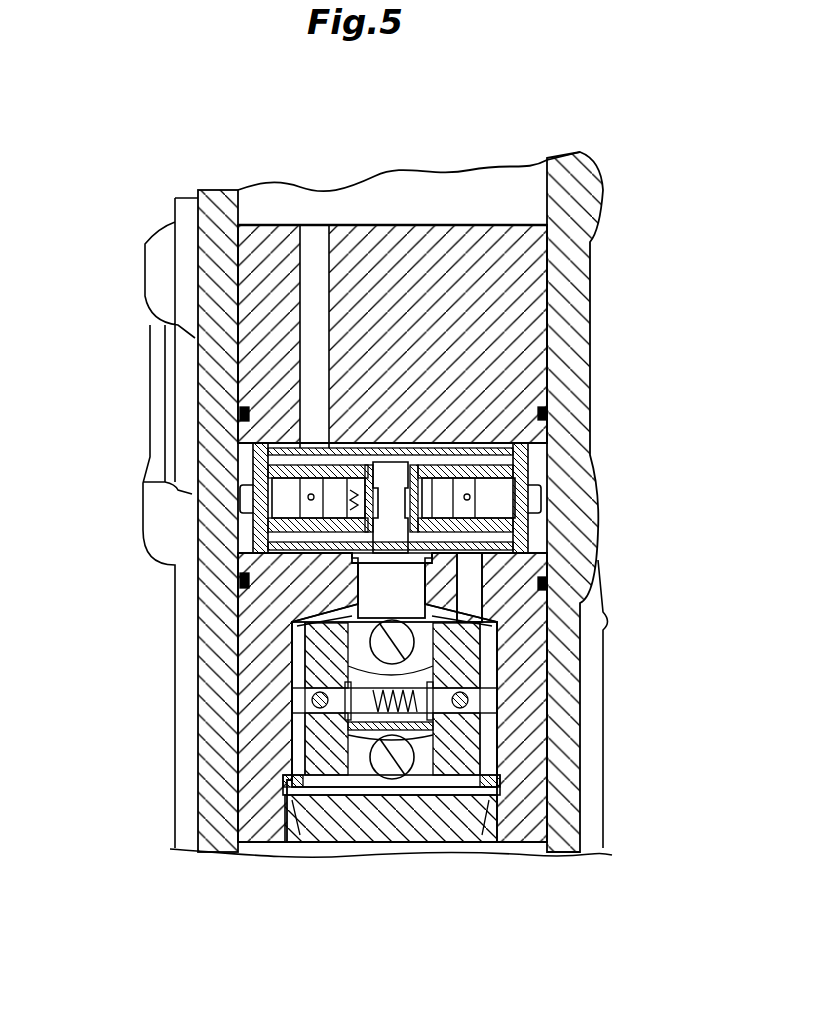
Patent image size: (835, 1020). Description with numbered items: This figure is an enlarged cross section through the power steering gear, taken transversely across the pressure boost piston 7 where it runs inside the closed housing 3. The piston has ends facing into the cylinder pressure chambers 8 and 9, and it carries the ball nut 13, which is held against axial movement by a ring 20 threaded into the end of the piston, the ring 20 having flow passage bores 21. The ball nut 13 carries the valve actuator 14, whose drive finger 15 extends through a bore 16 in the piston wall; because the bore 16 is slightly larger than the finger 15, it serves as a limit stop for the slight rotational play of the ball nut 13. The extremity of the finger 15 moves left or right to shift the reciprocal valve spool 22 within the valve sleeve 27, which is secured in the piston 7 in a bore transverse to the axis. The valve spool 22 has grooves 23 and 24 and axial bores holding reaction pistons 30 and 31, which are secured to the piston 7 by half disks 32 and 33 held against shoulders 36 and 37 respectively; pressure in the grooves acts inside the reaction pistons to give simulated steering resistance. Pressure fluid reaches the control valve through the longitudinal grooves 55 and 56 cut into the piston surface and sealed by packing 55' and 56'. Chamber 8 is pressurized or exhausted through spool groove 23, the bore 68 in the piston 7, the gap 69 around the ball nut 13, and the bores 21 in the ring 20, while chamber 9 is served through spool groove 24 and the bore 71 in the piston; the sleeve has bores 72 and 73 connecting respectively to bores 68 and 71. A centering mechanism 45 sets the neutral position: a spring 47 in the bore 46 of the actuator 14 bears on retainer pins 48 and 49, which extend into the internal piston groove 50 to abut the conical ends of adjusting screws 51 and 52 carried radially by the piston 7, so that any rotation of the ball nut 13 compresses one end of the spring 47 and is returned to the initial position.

The housing 3 is at (212, 230).
The pressure boost piston 7 is at (268, 250).
The pressure chamber 9 is at (352, 195).
The groove 24 is at (333, 452).
The bore 71 is at (318, 402).
The packing 56' is at (308, 393).
The longitudinal groove 56 is at (309, 555).
The shoulder 37 is at (262, 440).
The bore 73 is at (290, 455).
The reaction piston 31 is at (265, 487).
The half disk 33 is at (283, 497).
The drive finger 15 is at (345, 590).
The bore 16 is at (322, 605).
The ball nut 13 is at (330, 640).
The valve actuator 14 is at (362, 660).
The valve spool 22 is at (405, 462).
The valve sleeve 27 is at (418, 450).
The packing 55' is at (615, 453).
The longitudinal groove 55 is at (482, 543).
The shoulder 36 is at (552, 425).
The half disk 32 is at (528, 465).
The reaction piston 30 is at (497, 503).
The groove 23 is at (502, 526).
The bore 72 is at (600, 566).
The bore 68 is at (470, 607).
The gap 69 is at (483, 645).
The piston groove 50 is at (480, 705).
The pressure chamber 8 is at (257, 849).
The ring 20 is at (302, 818).
The flow passage bores 21 is at (325, 820).
The adjusting screw 52 is at (318, 712).
The retainer pin 49 is at (367, 720).
The spring 47 is at (400, 725).
The bore 46 is at (430, 722).
The retainer pin 48 is at (488, 790).
The adjusting screw 51 is at (497, 780).
The centering mechanism 45 is at (140, 781).